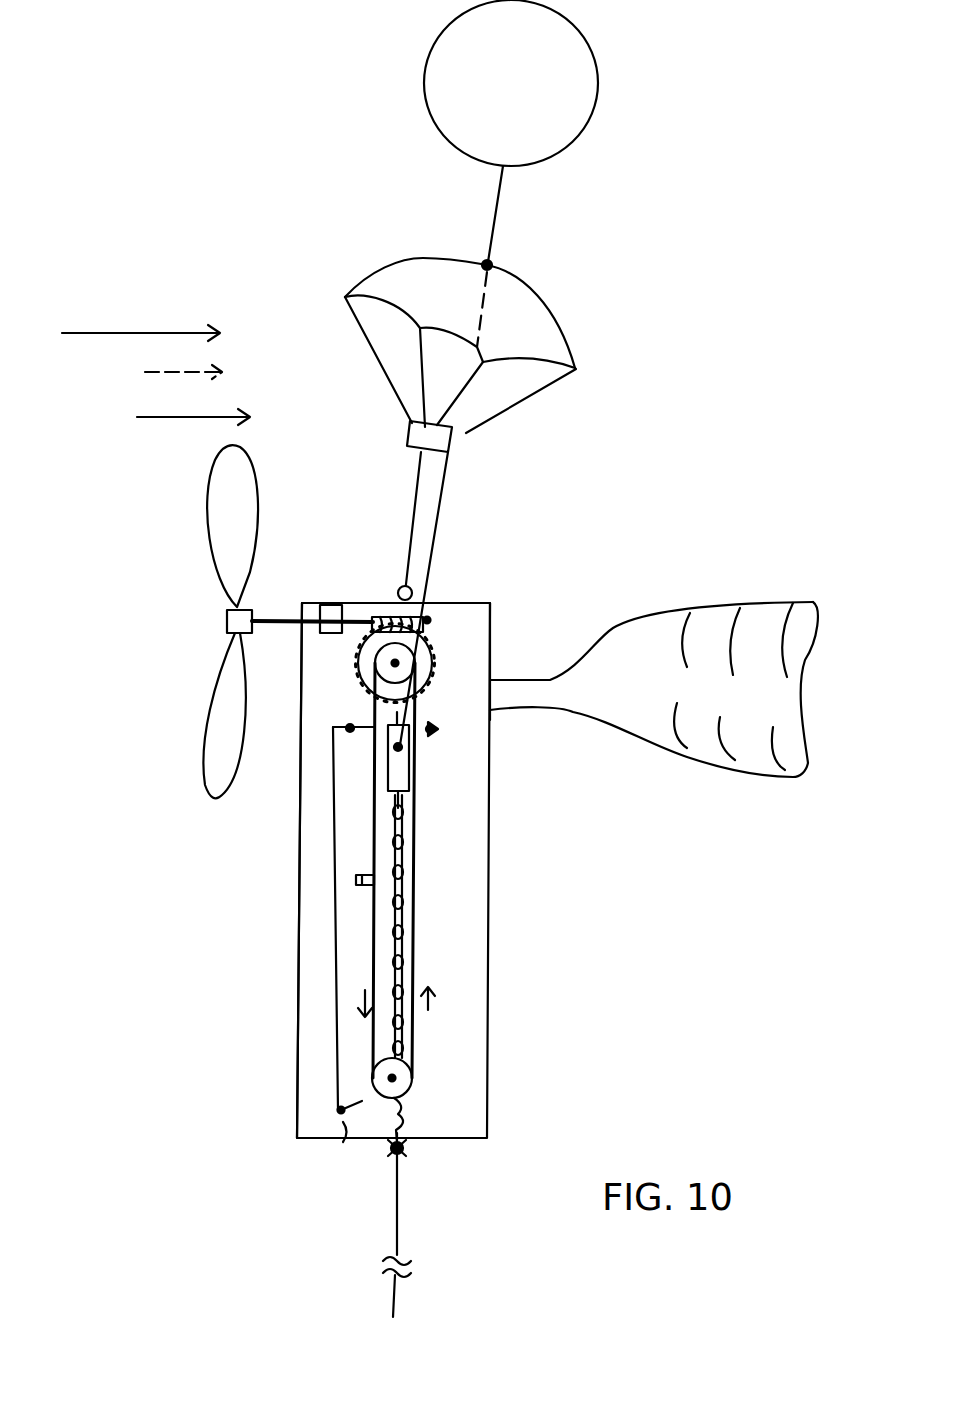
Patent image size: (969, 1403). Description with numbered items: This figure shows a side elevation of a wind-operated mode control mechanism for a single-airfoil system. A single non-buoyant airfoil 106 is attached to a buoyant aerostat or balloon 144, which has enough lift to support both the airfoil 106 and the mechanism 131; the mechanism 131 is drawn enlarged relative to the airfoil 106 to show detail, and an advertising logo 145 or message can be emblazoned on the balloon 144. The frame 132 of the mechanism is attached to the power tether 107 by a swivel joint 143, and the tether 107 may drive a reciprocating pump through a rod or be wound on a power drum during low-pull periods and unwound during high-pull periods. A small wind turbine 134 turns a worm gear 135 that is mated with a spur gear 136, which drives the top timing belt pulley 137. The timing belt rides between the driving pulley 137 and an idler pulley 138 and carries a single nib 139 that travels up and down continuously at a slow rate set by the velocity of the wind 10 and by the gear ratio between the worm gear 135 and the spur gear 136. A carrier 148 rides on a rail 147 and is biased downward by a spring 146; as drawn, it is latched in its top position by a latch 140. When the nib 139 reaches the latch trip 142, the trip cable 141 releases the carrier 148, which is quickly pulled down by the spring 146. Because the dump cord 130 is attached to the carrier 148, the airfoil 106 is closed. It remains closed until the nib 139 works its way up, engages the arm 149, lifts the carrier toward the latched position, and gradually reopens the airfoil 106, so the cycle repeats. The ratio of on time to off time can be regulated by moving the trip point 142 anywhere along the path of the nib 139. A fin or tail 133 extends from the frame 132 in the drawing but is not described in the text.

The wind 10 is at (156, 375).
The airfoil 106 is at (533, 318).
The power tether 107 is at (410, 1220).
The dump cord 130 is at (457, 475).
The mechanism 131 is at (513, 598).
The frame 132 is at (477, 833).
The tail 133 is at (653, 740).
The small wind turbine 134 is at (225, 773).
The worm gear 135 is at (433, 618).
The spur gear 136 is at (445, 653).
The top timing belt pulley 137 is at (372, 640).
The idler pulley 138 is at (415, 1097).
The nib 139 is at (357, 890).
The latch 140 is at (340, 713).
The trip cable 141 is at (325, 1018).
The latch trip 142 is at (343, 1142).
The swivel joint 143 is at (413, 1153).
The balloon 144 is at (553, 165).
The advertising logo 145 is at (540, 110).
The spring 146 is at (413, 1113).
The rail 147 is at (403, 898).
The carrier 148 is at (410, 765).
The arm 149 is at (445, 727).